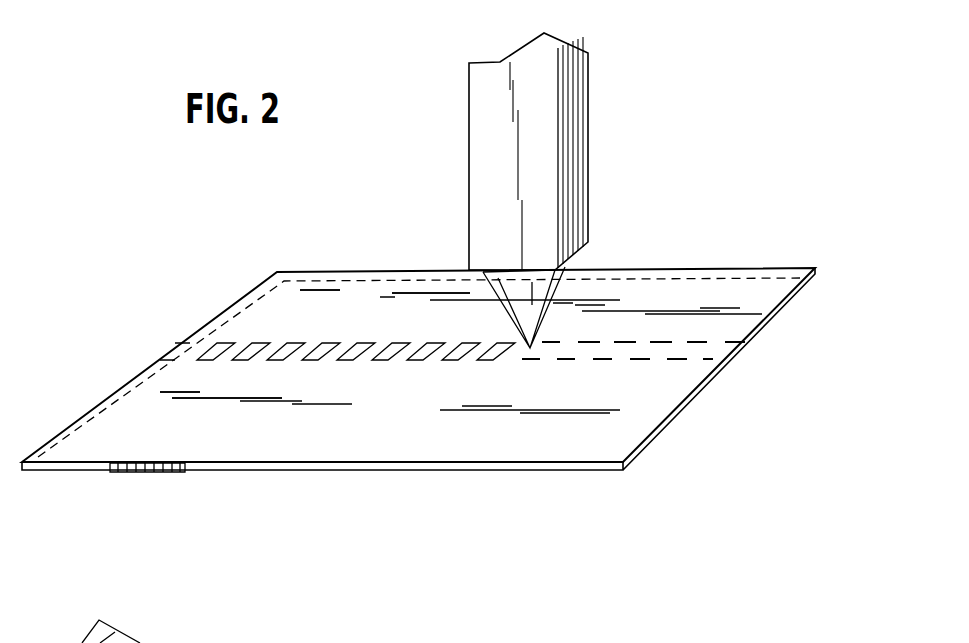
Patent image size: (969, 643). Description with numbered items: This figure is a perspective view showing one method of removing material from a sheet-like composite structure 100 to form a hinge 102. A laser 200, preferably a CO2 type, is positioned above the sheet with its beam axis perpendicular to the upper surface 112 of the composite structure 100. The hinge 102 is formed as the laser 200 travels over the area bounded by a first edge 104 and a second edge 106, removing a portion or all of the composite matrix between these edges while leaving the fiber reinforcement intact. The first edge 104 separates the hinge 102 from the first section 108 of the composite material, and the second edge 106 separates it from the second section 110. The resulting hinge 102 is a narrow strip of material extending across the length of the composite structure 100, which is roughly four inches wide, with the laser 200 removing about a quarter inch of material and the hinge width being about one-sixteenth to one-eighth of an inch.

The composite structure 100 is at (389, 492).
The hinge 102 is at (230, 345).
The first edge 104 is at (633, 362).
The second edge 106 is at (654, 342).
The first section 108 is at (170, 440).
The second section 110 is at (384, 305).
The upper surface 112 is at (223, 433).
The laser 200 is at (505, 160).